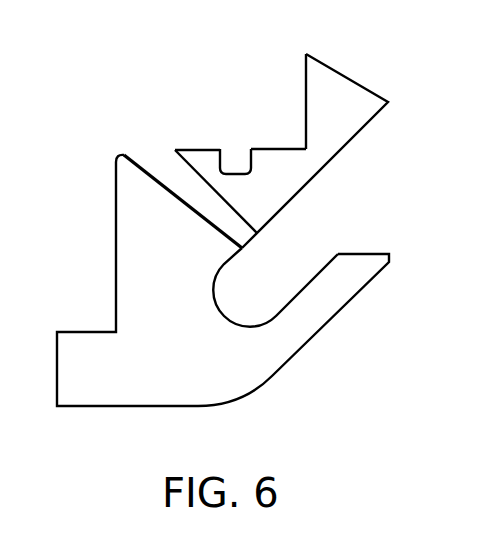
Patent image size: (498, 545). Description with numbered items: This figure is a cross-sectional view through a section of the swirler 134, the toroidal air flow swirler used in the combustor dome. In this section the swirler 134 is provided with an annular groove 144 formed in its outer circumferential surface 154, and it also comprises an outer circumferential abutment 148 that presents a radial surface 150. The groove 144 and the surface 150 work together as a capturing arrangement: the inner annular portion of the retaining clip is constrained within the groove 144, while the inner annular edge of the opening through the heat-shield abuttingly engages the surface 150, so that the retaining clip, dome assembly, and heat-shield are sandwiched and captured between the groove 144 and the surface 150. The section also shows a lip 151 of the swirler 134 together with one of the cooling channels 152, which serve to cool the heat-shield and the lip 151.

The swirler 134 is at (147, 283).
The annular groove 144 is at (236, 157).
The outer circumferential abutment 148 is at (320, 86).
The radial surface 150 is at (305, 67).
The lip 151 is at (357, 278).
The cooling channels 152 is at (233, 224).
The outer circumferential surface 154 is at (198, 147).